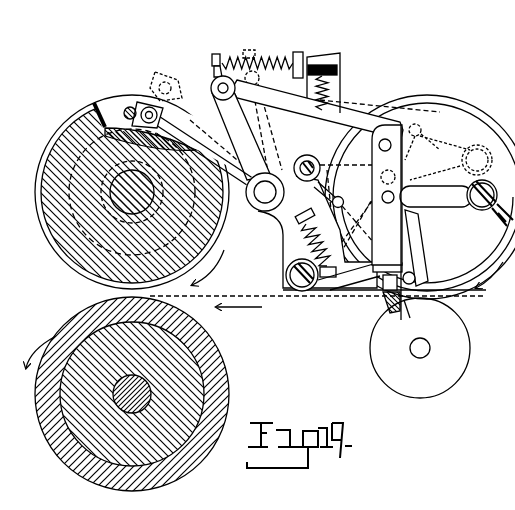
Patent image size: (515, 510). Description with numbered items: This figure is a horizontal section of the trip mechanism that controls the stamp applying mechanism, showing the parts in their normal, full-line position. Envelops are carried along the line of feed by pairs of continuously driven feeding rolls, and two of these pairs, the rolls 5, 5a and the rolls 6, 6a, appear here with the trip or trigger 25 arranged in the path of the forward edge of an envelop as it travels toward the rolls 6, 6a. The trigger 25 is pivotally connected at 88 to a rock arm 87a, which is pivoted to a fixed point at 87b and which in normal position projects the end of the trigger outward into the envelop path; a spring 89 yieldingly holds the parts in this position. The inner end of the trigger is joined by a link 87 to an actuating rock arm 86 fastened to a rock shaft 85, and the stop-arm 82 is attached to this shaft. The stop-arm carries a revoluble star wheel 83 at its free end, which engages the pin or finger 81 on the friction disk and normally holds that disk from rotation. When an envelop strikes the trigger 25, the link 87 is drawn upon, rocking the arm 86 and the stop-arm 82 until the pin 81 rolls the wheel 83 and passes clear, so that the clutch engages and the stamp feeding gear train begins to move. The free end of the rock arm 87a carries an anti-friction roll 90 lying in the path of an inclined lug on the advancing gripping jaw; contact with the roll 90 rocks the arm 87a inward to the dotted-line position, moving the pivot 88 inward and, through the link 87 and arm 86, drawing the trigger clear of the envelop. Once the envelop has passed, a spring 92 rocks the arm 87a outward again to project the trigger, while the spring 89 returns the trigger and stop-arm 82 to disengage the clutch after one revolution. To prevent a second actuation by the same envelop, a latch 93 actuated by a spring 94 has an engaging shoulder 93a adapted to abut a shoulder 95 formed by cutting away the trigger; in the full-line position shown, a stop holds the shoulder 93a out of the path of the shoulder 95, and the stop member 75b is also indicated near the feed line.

The feed roll 5 is at (470, 357).
The feed roll 5a is at (467, 122).
The feed roll 6 is at (228, 374).
The feed roll 6a is at (70, 258).
The trip or trigger 25 is at (412, 236).
The stop member 75b is at (412, 300).
The pin or finger 81 is at (128, 108).
The stop-arm 82 is at (183, 132).
The star wheel 83 is at (149, 106).
The rock shaft 85 is at (262, 204).
The actuating rock arm 86 is at (241, 123).
The link 87 is at (319, 111).
The rock arm 87a is at (319, 195).
The fixed pivot 87b is at (312, 150).
The pivotal connection 88 is at (415, 212).
The spring 89 is at (212, 60).
The anti-friction roll 90 is at (478, 209).
The spring 92 is at (333, 84).
The latch 93 is at (300, 293).
The engaging shoulder 93a is at (346, 298).
The spring 94 is at (311, 241).
The shoulder 95 is at (383, 300).